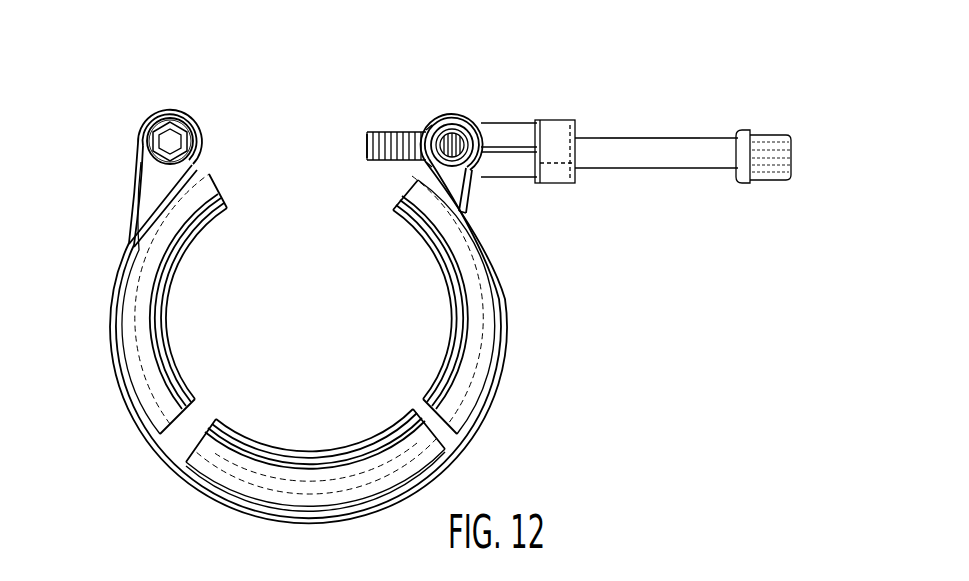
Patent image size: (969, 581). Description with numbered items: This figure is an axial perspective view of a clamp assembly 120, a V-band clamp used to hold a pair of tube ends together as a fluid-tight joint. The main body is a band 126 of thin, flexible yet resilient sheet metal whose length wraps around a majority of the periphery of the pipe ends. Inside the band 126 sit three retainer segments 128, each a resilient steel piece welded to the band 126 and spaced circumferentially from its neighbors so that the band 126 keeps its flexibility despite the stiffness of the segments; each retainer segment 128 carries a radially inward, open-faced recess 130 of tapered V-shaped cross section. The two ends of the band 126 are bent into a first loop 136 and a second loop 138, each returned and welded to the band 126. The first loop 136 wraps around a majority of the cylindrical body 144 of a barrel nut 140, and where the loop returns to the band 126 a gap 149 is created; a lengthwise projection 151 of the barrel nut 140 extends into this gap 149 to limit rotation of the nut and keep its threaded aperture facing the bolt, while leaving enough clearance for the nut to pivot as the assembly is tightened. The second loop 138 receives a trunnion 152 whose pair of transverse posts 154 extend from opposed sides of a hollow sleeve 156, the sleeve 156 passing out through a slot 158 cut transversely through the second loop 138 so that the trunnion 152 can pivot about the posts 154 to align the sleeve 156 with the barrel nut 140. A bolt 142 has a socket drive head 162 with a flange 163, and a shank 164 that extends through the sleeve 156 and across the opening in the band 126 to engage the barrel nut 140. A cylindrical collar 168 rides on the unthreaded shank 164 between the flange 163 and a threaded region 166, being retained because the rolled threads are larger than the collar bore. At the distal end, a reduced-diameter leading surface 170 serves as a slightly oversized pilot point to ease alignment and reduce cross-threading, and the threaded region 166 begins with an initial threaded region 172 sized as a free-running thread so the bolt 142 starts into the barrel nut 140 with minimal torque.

The clamp assembly 120 is at (827, 83).
The band 126 is at (463, 437).
The retainer segments 128 is at (463, 363).
The recess 130 is at (183, 382).
The first loop 136 is at (145, 115).
The second loop 138 is at (430, 120).
The barrel nut 140 is at (173, 123).
The bolt 142 is at (653, 133).
The body 144 is at (140, 128).
The gap 149 is at (167, 190).
The projection 151 is at (148, 156).
The trunnion 152 is at (507, 117).
The posts 154 is at (453, 127).
The sleeve 156 is at (523, 133).
The slot 158 is at (418, 128).
The head 162 is at (787, 163).
The flange 163 is at (745, 185).
The shank 164 is at (613, 140).
The threaded region 166 is at (380, 127).
The collar 168 is at (560, 182).
The leading surface 170 is at (372, 142).
The initial threaded region 172 is at (410, 165).